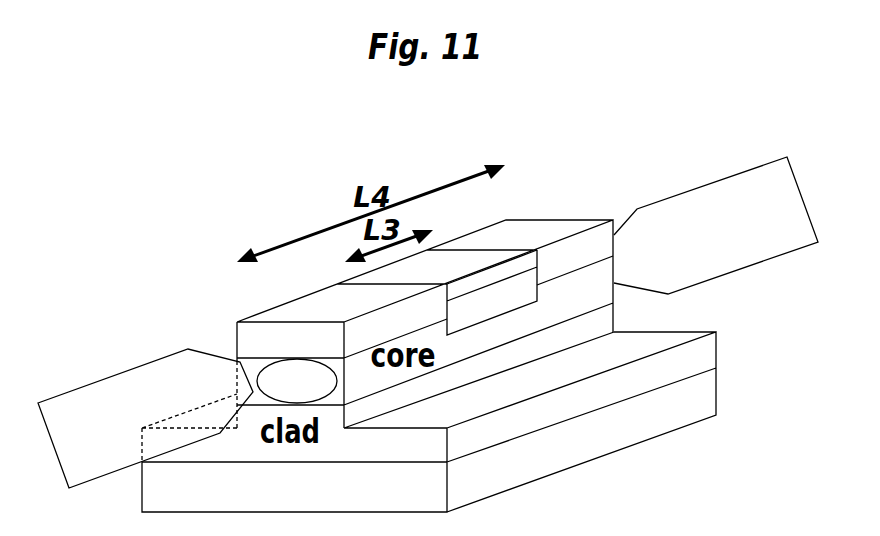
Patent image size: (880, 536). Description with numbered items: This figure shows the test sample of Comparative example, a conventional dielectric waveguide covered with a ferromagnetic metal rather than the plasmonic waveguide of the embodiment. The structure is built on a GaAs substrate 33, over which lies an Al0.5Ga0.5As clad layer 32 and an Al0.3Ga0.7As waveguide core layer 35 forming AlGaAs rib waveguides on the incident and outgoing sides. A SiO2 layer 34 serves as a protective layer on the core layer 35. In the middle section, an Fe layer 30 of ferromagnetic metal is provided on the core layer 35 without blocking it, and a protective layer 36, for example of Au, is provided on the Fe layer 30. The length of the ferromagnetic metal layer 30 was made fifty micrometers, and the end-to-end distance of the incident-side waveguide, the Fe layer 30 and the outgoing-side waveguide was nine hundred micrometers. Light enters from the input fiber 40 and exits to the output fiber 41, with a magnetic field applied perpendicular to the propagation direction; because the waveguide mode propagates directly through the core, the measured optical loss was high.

The Fe layer 30 is at (492, 292).
The clad layer 32 is at (429, 397).
The GaAs substrate 33 is at (429, 440).
The SiO2 layer 34 is at (425, 324).
The waveguide core layer 35 is at (575, 282).
The protective layer 36 is at (495, 272).
The input optical fiber 40 is at (112, 376).
The output optical fiber 41 is at (764, 165).